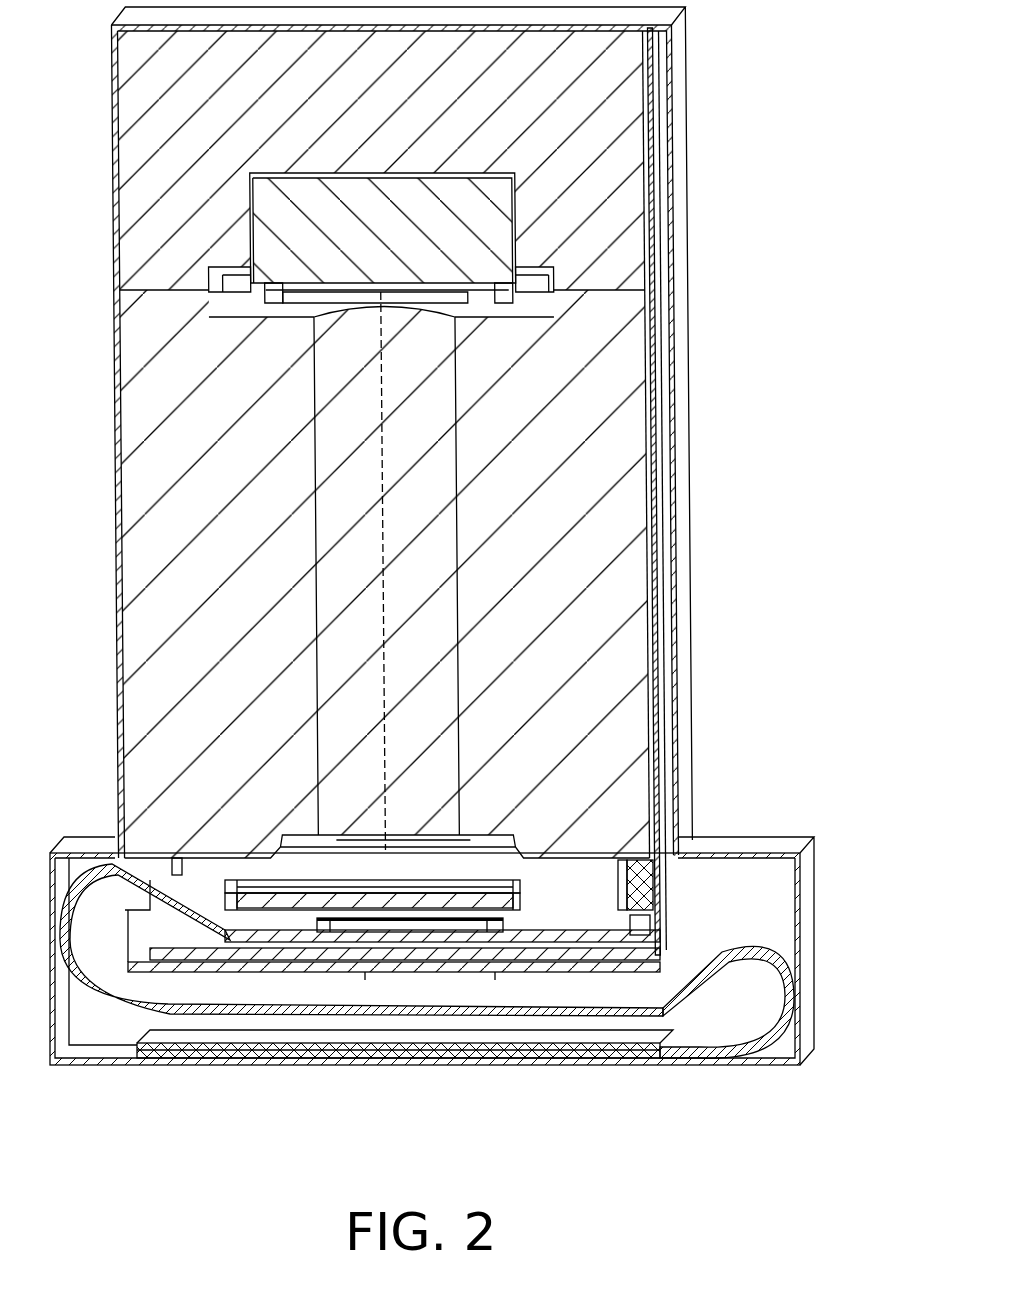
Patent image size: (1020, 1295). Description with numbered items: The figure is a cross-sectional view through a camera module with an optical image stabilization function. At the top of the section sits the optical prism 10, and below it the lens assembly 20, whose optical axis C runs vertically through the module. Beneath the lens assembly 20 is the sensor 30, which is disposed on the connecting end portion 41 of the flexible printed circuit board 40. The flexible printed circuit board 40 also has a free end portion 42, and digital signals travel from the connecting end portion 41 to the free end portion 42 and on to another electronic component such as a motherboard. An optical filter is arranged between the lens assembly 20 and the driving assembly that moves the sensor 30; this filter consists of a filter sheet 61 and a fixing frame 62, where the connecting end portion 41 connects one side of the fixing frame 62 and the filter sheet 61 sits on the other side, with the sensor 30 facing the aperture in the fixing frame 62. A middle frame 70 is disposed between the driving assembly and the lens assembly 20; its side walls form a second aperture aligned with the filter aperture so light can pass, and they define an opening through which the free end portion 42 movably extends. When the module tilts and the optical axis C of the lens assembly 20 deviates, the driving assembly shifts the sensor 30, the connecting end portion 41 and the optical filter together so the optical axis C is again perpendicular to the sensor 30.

The optical prism 10 is at (440, 232).
The lens assembly 20 is at (430, 545).
The optical axis C is at (380, 405).
The sensor 30 is at (480, 930).
The flexible printed circuit board 40 is at (478, 948).
The connecting end portion 41 is at (560, 932).
The free end portion 42 is at (590, 1060).
The filter sheet 61 is at (232, 888).
The fixing frame 62 is at (340, 903).
The middle frame 70 is at (592, 912).